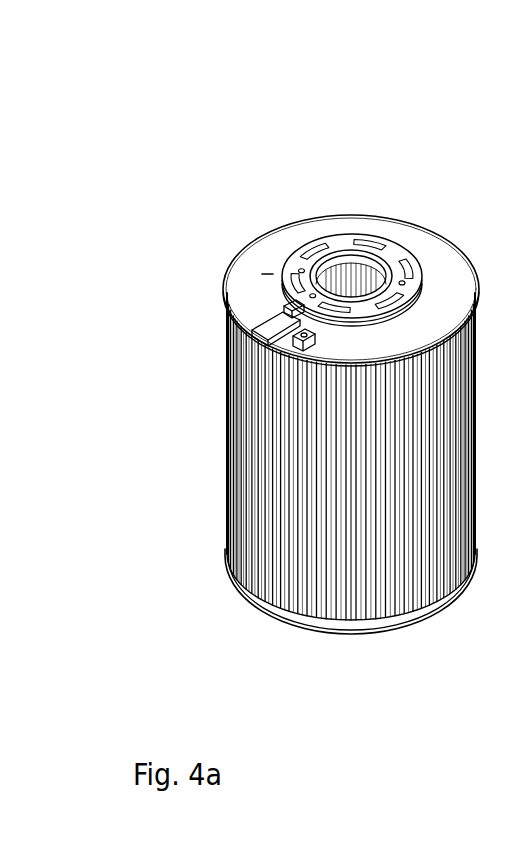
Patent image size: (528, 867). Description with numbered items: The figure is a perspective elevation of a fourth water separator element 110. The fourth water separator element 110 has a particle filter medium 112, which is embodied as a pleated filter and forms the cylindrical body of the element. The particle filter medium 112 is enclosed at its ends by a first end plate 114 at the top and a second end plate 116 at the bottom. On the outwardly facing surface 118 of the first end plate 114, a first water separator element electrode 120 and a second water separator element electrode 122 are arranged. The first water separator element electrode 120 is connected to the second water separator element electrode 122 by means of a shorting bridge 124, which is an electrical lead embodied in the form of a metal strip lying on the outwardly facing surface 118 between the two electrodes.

The fourth water separator element 110 is at (240, 175).
The particle filter medium 112 is at (199, 482).
The first end plate 114 is at (409, 202).
The second end plate 116 is at (361, 663).
The outwardly facing surface 118 is at (245, 282).
The first water separator element electrode 120 is at (290, 311).
The second water separator element electrode 122 is at (277, 333).
The shorting bridge 124 is at (258, 330).